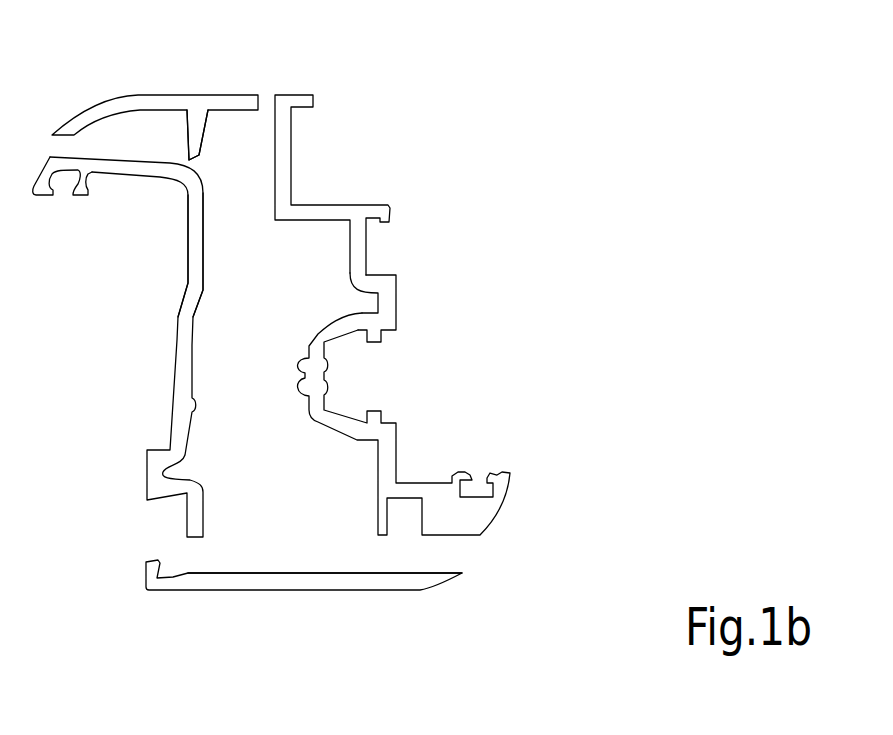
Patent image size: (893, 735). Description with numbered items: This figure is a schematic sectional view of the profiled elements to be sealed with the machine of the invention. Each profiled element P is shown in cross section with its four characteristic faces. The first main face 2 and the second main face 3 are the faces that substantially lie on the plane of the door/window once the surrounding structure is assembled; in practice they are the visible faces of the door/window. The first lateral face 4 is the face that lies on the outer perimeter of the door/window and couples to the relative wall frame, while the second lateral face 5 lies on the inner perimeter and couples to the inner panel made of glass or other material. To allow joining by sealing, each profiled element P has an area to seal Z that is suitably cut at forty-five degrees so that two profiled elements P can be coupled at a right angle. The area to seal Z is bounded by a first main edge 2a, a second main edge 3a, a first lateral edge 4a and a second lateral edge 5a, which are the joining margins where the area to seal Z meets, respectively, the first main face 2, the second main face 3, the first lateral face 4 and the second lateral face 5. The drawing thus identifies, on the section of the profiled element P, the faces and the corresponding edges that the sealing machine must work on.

The first main face 2 is at (632, 0).
The first main edge 2a is at (497, 0).
The second main face 3 is at (168, 93).
The second main edge 3a is at (208, 108).
The first lateral face 4 is at (396, 314).
The first lateral edge 4a is at (390, 288).
The second lateral face 5 is at (177, 340).
The second lateral edge 5a is at (193, 283).
The profiled element P is at (135, 365).
The area to seal Z is at (792, 0).